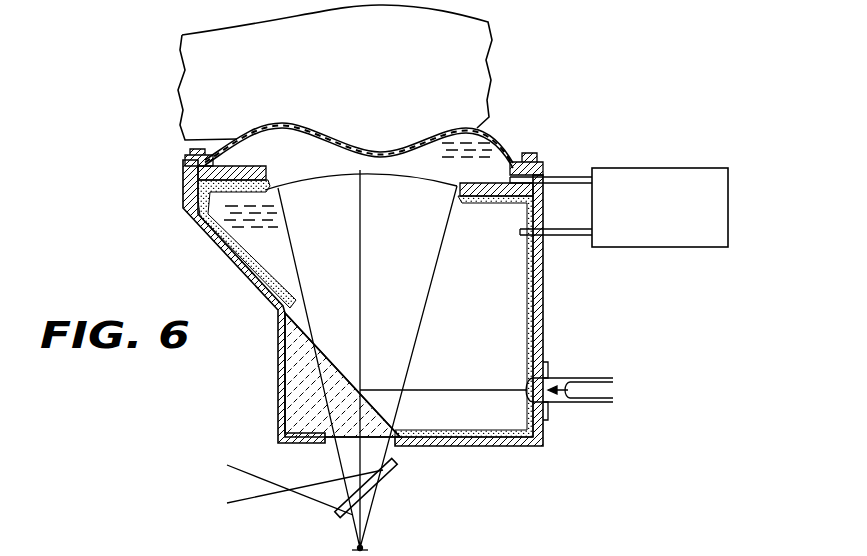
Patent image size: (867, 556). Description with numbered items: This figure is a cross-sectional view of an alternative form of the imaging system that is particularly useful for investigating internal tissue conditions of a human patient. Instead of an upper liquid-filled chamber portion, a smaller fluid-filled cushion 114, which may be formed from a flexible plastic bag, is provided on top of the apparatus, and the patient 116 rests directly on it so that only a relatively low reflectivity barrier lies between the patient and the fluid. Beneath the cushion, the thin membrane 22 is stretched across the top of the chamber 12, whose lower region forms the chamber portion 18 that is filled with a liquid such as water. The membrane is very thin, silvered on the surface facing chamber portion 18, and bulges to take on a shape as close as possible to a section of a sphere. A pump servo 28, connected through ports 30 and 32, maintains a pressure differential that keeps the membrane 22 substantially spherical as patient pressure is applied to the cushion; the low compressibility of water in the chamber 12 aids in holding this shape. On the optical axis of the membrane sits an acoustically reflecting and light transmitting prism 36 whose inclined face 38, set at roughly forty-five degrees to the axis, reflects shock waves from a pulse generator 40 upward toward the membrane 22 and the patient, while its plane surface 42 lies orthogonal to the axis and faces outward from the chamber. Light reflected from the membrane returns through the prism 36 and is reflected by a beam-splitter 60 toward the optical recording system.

The patient 116 is at (370, 93).
The fluid-filled cushion 114 is at (492, 129).
The chamber 12 is at (562, 327).
The chamber portion 18 is at (477, 297).
The membrane 22 is at (333, 182).
The fluid pump servomechanism 28 is at (640, 168).
The conduit 30 is at (572, 176).
The conduit 32 is at (572, 238).
The prism 36 is at (336, 417).
The inclined face 38 is at (316, 350).
The pulse generator 40 is at (575, 403).
The plane surface 42 is at (347, 442).
The beam-splitter 60 is at (383, 478).